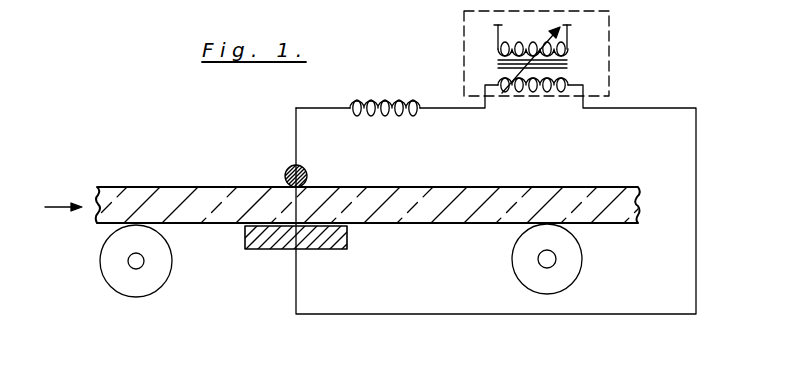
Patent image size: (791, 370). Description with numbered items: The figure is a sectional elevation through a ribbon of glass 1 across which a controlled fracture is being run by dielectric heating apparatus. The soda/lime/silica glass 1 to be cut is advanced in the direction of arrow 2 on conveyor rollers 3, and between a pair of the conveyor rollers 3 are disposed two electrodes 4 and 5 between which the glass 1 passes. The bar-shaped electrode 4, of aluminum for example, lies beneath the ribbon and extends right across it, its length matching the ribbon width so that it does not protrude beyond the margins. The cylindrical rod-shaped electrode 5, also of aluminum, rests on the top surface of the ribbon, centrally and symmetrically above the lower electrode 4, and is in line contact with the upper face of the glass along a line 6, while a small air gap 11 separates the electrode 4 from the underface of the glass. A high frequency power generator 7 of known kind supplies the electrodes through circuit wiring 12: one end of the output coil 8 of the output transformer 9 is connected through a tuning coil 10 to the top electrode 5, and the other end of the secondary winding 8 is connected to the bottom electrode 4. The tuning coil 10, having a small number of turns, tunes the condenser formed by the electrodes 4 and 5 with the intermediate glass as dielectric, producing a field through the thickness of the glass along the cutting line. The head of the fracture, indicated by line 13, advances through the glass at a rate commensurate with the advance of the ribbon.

The ribbon of glass 1 is at (143, 197).
The arrow 2 is at (54, 207).
The conveyor rollers 3 is at (160, 278).
The bar-shaped electrode 4 is at (278, 240).
The rod-shaped electrode 5 is at (307, 178).
The line of contact 6 is at (289, 189).
The high frequency power generator 7 is at (606, 84).
The output coil 8 is at (535, 86).
The output transformer 9 is at (497, 65).
The tuning coil 10 is at (362, 100).
The air gap 11 is at (347, 228).
The circuit wiring 12 is at (496, 199).
The head of the fracture 13 is at (297, 203).